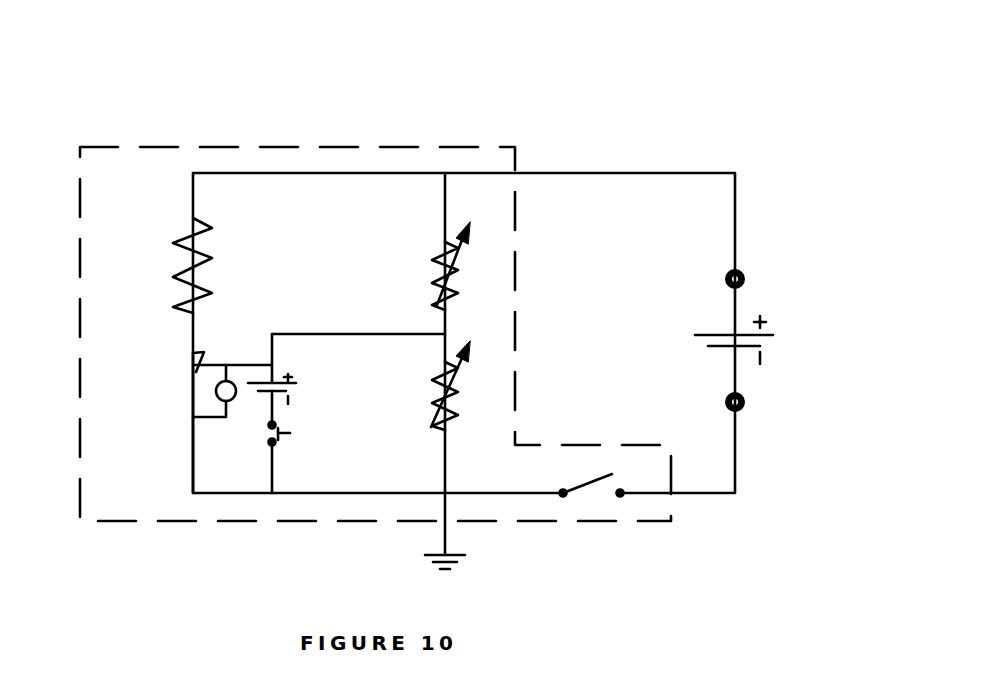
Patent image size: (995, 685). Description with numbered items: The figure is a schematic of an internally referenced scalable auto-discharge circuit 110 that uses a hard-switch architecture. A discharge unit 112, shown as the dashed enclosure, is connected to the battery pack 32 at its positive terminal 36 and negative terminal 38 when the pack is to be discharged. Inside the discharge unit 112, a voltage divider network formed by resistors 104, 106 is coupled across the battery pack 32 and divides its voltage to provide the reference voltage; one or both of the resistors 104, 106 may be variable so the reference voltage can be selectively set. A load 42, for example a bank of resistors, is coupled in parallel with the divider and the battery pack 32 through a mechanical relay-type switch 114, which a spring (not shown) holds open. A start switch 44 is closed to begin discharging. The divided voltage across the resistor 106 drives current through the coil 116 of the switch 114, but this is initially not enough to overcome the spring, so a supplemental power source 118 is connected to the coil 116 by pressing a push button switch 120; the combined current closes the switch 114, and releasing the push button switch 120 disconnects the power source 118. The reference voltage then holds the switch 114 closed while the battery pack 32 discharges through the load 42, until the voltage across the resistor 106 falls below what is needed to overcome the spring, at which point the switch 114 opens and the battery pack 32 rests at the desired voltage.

The internally referenced scalable auto-discharge circuit 110 is at (266, 88).
The discharge unit 112 is at (466, 145).
The load 42 is at (173, 268).
The resistor 104 is at (433, 283).
The resistor 106 is at (433, 400).
The mechanical relay-type switch 114 is at (200, 360).
The coil 116 is at (233, 399).
The supplemental power source 118 is at (296, 385).
The push button switch 120 is at (290, 433).
The battery pack 32 is at (695, 335).
The positive terminal 36 is at (745, 282).
The negative terminal 38 is at (745, 403).
The start switch 44 is at (596, 482).